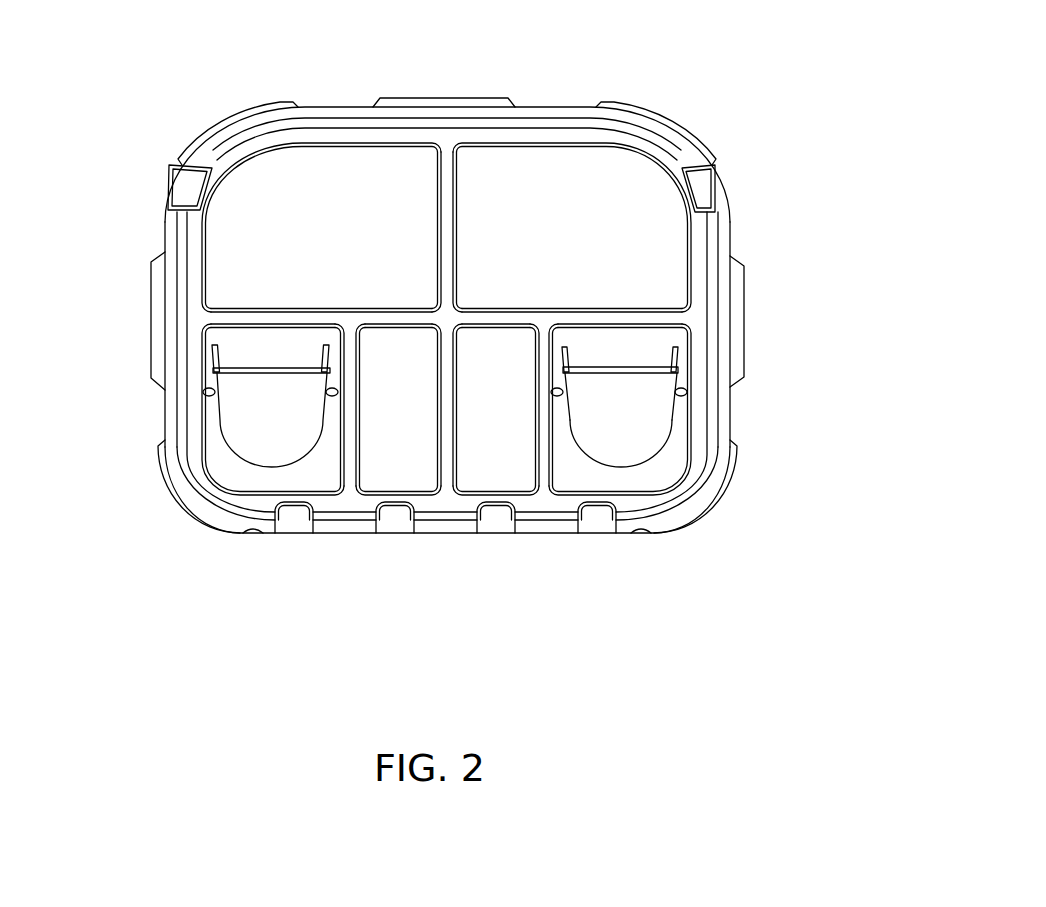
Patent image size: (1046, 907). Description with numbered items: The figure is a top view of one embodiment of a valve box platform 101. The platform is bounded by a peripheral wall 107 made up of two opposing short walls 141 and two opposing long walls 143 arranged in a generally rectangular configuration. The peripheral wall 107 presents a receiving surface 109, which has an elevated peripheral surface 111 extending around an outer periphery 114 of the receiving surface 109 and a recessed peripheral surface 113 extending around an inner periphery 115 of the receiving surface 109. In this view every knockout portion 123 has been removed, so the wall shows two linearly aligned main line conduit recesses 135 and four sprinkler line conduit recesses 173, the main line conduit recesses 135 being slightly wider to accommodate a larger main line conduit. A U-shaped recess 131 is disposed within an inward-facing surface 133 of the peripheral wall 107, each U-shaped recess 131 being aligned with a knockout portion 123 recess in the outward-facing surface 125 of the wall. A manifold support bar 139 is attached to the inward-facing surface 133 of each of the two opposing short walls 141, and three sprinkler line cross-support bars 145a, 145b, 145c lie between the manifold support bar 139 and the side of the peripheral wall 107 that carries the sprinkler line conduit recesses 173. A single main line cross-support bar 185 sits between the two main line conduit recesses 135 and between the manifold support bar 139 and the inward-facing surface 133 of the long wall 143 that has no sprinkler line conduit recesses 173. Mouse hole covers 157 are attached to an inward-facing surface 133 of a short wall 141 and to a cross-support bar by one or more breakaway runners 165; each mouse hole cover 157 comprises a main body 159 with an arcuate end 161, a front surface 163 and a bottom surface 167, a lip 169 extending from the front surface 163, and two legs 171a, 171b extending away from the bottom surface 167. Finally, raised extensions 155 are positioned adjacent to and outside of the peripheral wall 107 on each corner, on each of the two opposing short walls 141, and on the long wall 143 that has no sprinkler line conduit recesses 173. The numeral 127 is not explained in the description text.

The valve box platform 101 is at (463, 93).
The peripheral wall 107 is at (267, 537).
The receiving surface 109 is at (172, 418).
The elevated peripheral surface 111 is at (727, 427).
The recessed peripheral surface 113 is at (537, 513).
The outer periphery 114 is at (170, 235).
The inner periphery 115 is at (642, 442).
The knockout portion 123 is at (600, 535).
The outward-facing surface 125 is at (155, 245).
The foot 127 is at (287, 537).
The U-shaped recess 131 is at (618, 473).
The inward-facing surface 133 is at (690, 503).
The main line conduit recess 135 is at (170, 180).
The manifold support bar 139 is at (312, 310).
The short wall 141 is at (160, 232).
The long wall 143 is at (328, 113).
The sprinkler line cross-support bar 145a is at (347, 467).
The sprinkler line cross-support bar 145b is at (447, 450).
The sprinkler line cross-support bar 145c is at (545, 405).
The raised extension 155 is at (428, 102).
The mouse hole cover 157 is at (270, 420).
The main body 159 is at (641, 421).
The arcuate end 161 is at (635, 458).
The front surface 163 is at (663, 478).
The breakaway runner 165 is at (720, 422).
The bottom surface 167 is at (603, 362).
The lip 169 is at (678, 371).
The leg 171a is at (566, 347).
The leg 171b is at (677, 347).
The sprinkler line conduit recess 173 is at (593, 540).
The main line cross-support bar 185 is at (423, 230).